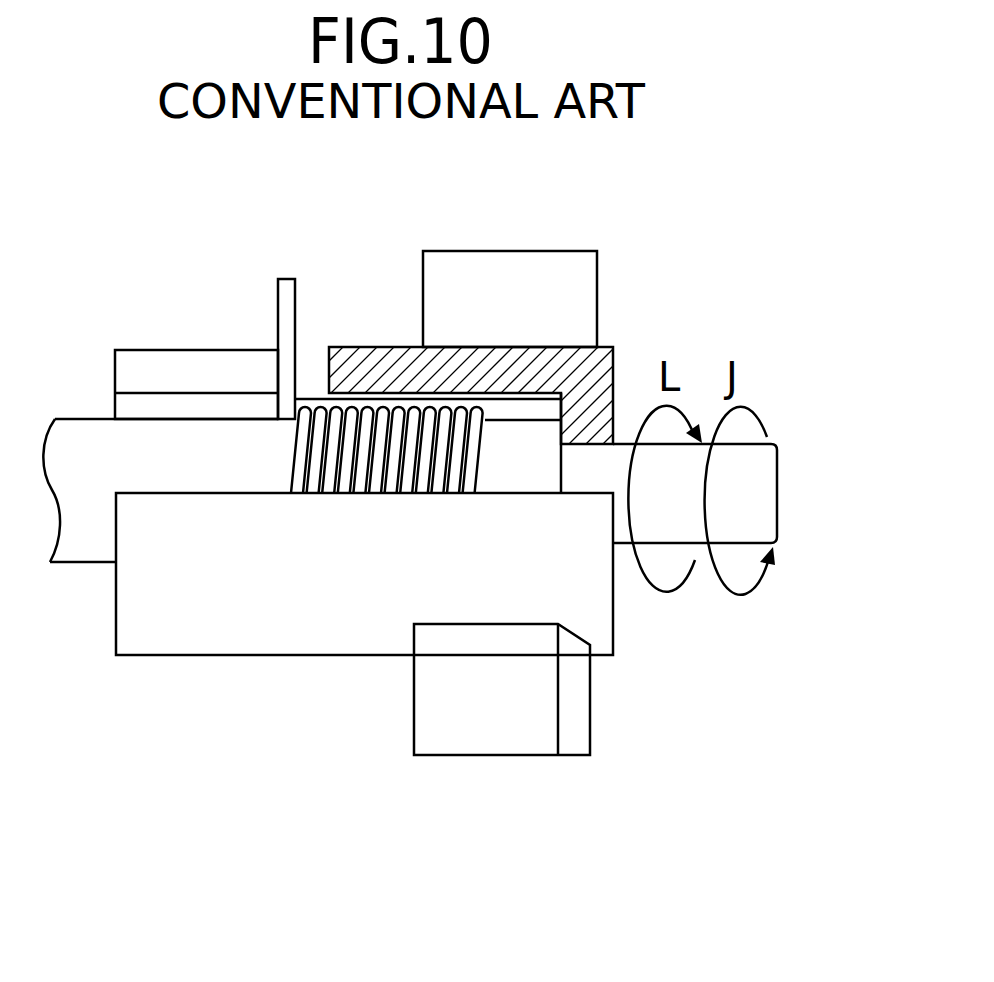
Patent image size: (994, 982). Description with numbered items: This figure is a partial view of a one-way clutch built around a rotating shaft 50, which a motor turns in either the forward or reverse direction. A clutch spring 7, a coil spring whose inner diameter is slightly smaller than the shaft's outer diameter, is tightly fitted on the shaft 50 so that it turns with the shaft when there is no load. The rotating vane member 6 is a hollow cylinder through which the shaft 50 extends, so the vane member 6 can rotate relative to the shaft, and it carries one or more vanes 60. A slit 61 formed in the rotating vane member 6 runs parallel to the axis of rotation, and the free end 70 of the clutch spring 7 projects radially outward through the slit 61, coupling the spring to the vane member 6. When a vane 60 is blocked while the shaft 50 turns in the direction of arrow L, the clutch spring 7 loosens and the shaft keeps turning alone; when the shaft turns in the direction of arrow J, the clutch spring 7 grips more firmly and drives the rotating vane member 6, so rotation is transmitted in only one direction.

The rotating vane member 6 is at (207, 620).
The clutch spring 7 is at (397, 413).
The rotating shaft 50 is at (752, 523).
The vane 60 is at (528, 295).
The slit 61 is at (168, 373).
The free end 70 is at (277, 323).